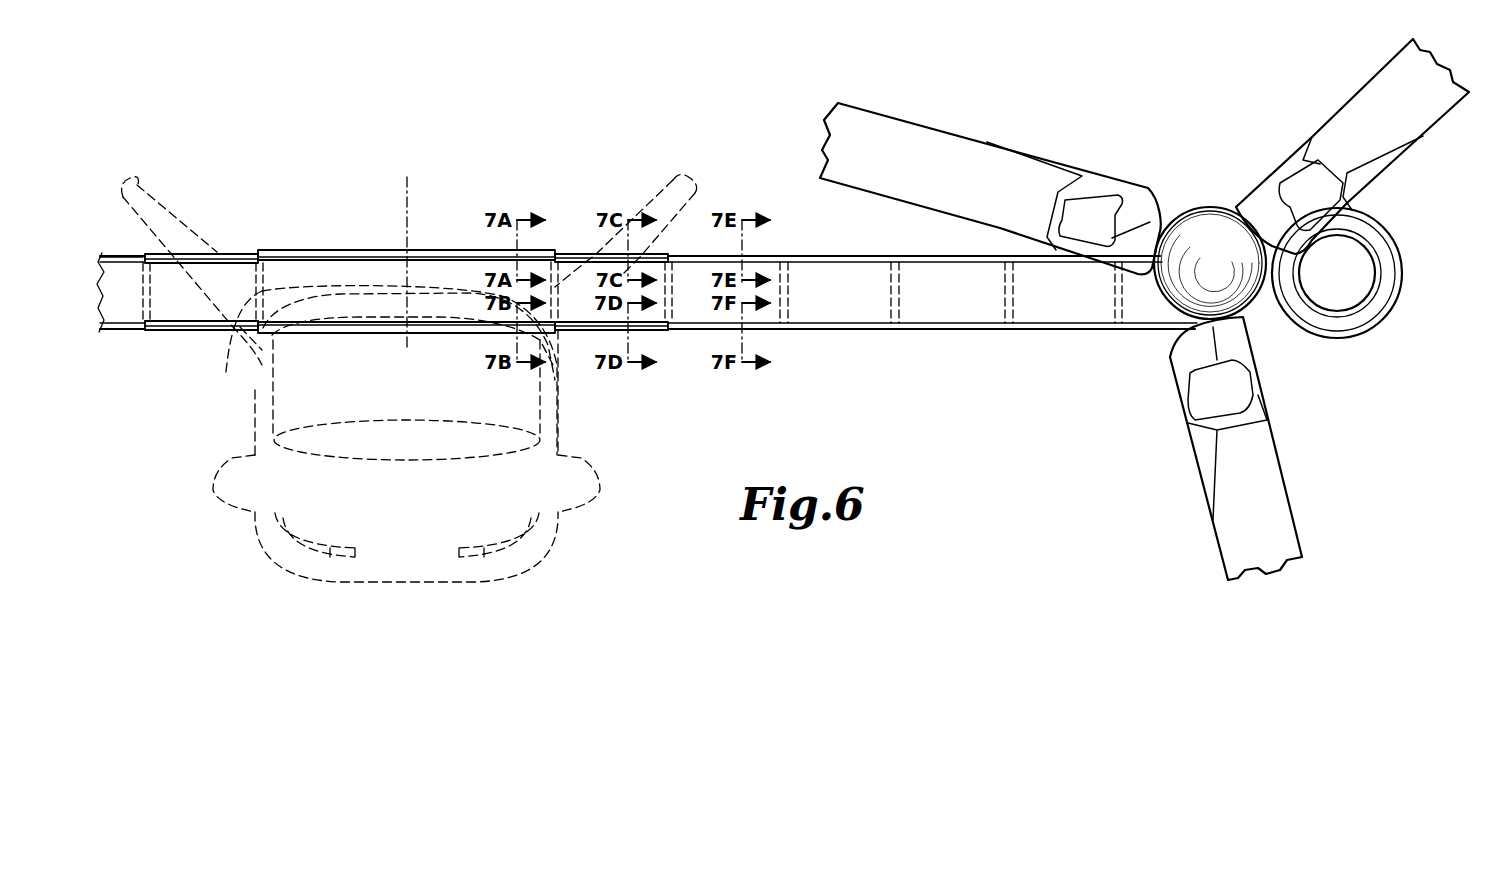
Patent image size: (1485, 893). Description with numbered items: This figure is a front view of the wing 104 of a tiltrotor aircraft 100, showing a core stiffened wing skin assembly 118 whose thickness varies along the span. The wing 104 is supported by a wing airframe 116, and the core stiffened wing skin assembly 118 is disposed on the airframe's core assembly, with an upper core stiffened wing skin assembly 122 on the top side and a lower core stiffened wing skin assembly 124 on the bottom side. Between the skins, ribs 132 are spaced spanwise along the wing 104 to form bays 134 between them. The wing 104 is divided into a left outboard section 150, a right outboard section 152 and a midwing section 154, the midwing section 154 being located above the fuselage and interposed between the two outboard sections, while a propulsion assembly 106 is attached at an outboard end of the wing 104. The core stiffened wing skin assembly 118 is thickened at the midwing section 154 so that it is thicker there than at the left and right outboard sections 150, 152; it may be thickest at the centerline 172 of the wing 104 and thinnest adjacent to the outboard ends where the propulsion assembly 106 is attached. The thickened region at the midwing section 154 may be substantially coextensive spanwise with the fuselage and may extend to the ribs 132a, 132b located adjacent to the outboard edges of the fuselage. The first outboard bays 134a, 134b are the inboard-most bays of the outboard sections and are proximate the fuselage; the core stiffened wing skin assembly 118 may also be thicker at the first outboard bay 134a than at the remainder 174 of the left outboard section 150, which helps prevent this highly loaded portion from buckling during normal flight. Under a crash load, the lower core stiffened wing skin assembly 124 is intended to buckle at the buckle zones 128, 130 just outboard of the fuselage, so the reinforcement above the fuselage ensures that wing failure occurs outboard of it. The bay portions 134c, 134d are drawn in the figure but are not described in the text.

The tiltrotor aircraft 100 is at (368, 165).
The wing 104 is at (647, 276).
The wing airframe 116 is at (647, 276).
The propulsion assembly 106 is at (1375, 338).
The core stiffened wing skin assembly 118 is at (956, 254).
The upper core stiffened wing skin assembly 122 is at (176, 254).
The lower core stiffened wing skin assembly 124 is at (160, 332).
The buckle zone 128 is at (588, 340).
The buckle zone 130 is at (192, 336).
The ribs 132 is at (900, 298).
The rib 132a is at (558, 287).
The rib 132b is at (192, 286).
The bays 134 is at (832, 272).
The first outboard bay 134a is at (557, 380).
The first outboard bay 134b is at (190, 272).
The spar third portion 134c is at (445, 277).
The spar fourth portion 134d is at (370, 277).
The left outboard section 150 is at (1177, 410).
The right outboard section 152 is at (110, 252).
The midwing section 154 is at (553, 380).
The centerline 172 is at (407, 215).
The remainder 174 is at (1177, 380).